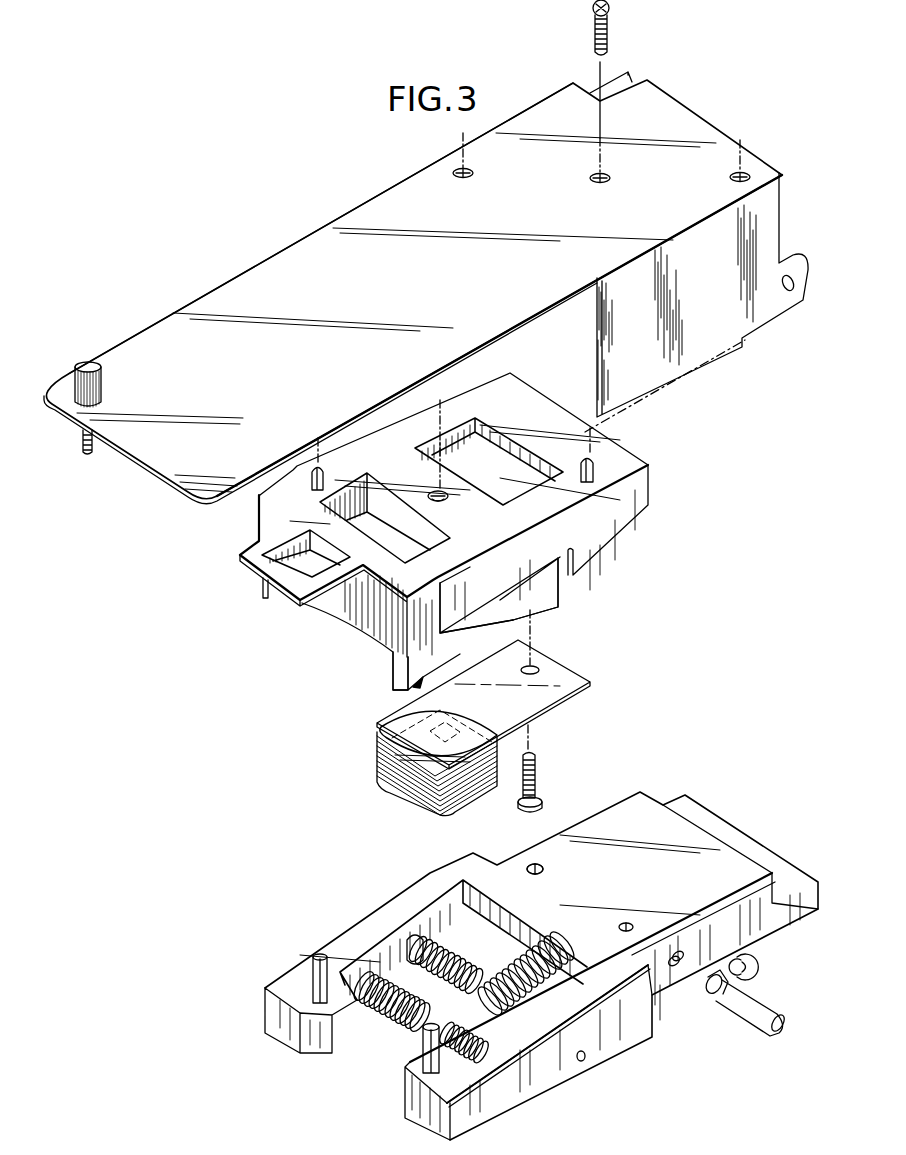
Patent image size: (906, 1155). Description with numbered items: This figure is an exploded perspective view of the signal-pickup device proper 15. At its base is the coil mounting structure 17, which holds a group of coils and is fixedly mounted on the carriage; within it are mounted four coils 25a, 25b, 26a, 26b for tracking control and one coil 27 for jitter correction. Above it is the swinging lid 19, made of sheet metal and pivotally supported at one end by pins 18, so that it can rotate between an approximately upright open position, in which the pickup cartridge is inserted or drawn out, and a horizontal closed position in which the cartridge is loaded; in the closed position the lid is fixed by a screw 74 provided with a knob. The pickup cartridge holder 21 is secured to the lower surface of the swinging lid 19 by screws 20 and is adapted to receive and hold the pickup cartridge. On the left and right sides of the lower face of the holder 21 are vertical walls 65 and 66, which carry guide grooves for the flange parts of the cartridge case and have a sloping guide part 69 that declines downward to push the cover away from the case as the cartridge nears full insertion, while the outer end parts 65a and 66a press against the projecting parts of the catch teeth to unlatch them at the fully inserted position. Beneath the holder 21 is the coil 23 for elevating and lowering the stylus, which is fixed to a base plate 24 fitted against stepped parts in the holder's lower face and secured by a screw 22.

The signal-pickup device proper 15 is at (345, 186).
The swinging lid 19 is at (283, 249).
The screws 20 is at (594, 36).
The screw provided with a knob 74 is at (86, 362).
The pickup cartridge holder 21 is at (650, 479).
The vertical wall 65 is at (490, 613).
The outer end part of vertical wall 65a is at (393, 668).
The vertical wall 66 is at (278, 596).
The outer end part of vertical wall 66a is at (262, 590).
The sloping guide part 69 is at (546, 609).
The coil for elevating and lowering the stylus 23 is at (377, 752).
The base plate 24 is at (556, 695).
The screw 22 is at (540, 786).
The coil mounting structure 17 is at (624, 796).
The pins 18 is at (752, 1003).
The coil for tracking control 25a is at (483, 1032).
The coil for tracking control 25b is at (372, 1002).
The coil for tracking control 26a is at (556, 995).
The coil for tracking control 26b is at (415, 937).
The coil for jitter correction 27 is at (540, 927).